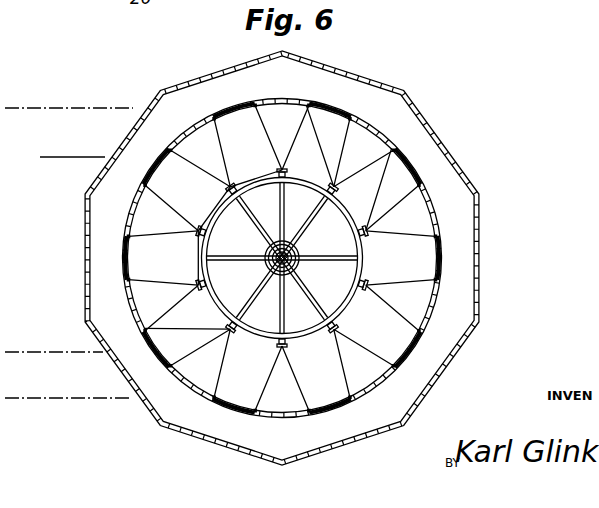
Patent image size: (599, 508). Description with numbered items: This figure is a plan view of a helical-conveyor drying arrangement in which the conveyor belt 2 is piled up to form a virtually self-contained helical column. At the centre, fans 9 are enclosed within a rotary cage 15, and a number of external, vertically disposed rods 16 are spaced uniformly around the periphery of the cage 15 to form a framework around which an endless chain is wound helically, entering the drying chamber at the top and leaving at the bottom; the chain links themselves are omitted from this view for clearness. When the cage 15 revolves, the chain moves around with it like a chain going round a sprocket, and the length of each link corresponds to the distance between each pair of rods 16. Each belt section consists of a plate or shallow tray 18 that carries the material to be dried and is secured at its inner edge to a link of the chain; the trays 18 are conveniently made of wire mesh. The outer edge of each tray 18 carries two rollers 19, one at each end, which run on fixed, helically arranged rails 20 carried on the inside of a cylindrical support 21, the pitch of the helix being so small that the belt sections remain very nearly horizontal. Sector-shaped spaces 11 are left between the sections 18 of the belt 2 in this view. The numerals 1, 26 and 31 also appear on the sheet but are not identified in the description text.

The polygonal outer frame 1 is at (217, 68).
The conveyor belt 2 is at (52, 105).
The fans 9 is at (338, 287).
The sector-shaped spaces 11 is at (202, 147).
The rotary cage 15 is at (368, 232).
The rods 16 is at (332, 184).
The trays 18 is at (140, 257).
The rollers 19 is at (168, 368).
The rails 20 is at (327, 100).
The cylindrical support 21 is at (412, 162).
The element 26 is at (423, 4).
The element 31 is at (186, 4).